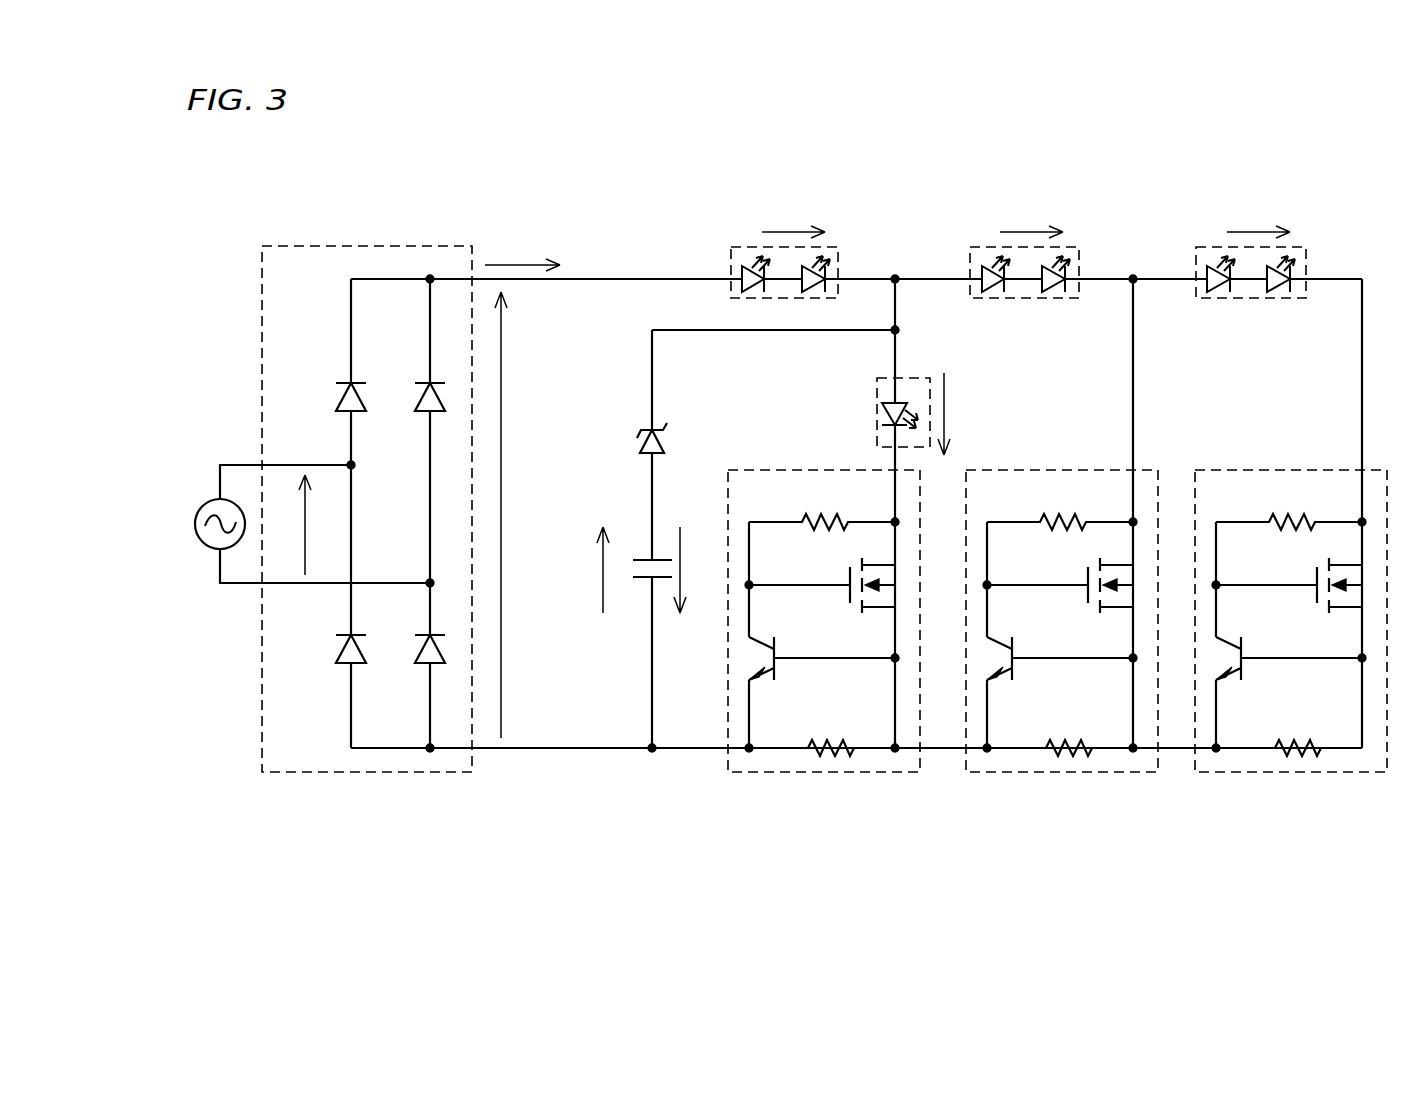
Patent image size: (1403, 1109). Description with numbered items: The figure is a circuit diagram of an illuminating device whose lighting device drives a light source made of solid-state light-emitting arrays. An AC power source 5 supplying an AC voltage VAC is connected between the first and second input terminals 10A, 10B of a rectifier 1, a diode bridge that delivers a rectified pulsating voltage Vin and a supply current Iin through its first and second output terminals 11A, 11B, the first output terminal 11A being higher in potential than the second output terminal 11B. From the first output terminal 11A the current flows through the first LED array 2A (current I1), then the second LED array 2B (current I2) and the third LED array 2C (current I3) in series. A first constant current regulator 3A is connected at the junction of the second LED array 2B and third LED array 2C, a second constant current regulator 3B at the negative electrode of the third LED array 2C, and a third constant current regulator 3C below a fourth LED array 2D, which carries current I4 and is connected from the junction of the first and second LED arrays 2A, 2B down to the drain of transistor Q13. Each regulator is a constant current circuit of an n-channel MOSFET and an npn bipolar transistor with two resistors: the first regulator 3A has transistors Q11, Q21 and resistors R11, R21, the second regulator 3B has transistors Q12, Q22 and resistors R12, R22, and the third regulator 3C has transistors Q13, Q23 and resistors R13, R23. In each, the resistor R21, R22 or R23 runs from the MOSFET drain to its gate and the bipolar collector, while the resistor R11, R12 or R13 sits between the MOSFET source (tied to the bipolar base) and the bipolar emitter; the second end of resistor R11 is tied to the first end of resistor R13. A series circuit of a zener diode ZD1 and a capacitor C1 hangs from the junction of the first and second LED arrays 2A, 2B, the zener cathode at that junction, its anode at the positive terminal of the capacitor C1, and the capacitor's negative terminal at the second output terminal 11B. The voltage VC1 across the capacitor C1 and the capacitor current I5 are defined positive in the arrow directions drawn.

The rectifier 1 is at (357, 229).
The AC power source 5 is at (206, 505).
The first input terminal 10A is at (349, 464).
The second input terminal 10B is at (429, 582).
The first output terminal 11A is at (428, 282).
The second output terminal 11B is at (429, 747).
The first LED array 2A is at (751, 230).
The second LED array 2B is at (990, 230).
The third LED array 2C is at (1215, 230).
The fourth LED array 2D is at (928, 364).
The first constant current regulator 3A is at (1086, 775).
The second constant current regulator 3B is at (1315, 775).
The third constant current regulator 3C is at (848, 775).
The zener diode ZD1 is at (622, 445).
The capacitor C1 is at (642, 636).
The resistor R11 is at (1063, 729).
The resistor R12 is at (1292, 729).
The resistor R13 is at (825, 729).
The resistor R21 is at (1060, 503).
The resistor R22 is at (1289, 503).
The resistor R23 is at (822, 503).
The transistor Q11 is at (1060, 581).
The transistor Q12 is at (1289, 581).
The transistor Q13 is at (822, 581).
The transistor Q21 is at (1060, 650).
The transistor Q22 is at (1289, 650).
The transistor Q23 is at (822, 650).
The supply current Iin is at (522, 251).
The output voltage of the rectifier Vin is at (523, 515).
The AC voltage VAC is at (333, 525).
The voltage across the capacitor VC1 is at (587, 570).
The current flowing through the first LED array I1 is at (793, 217).
The current flowing through the second LED array I2 is at (1031, 217).
The current flowing through the third LED array I3 is at (1258, 217).
The current flowing through the fourth LED array I4 is at (957, 414).
The current flowing through the capacitor I5 is at (692, 570).